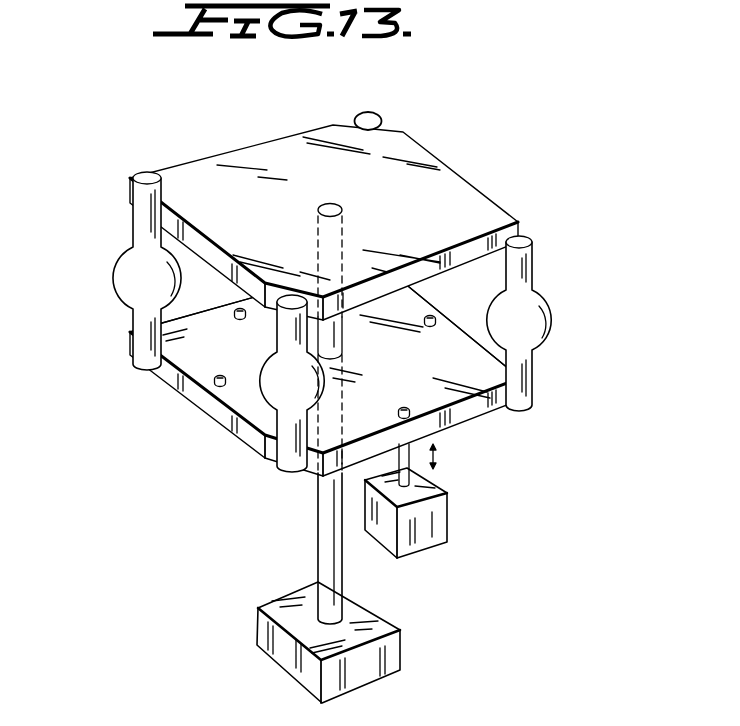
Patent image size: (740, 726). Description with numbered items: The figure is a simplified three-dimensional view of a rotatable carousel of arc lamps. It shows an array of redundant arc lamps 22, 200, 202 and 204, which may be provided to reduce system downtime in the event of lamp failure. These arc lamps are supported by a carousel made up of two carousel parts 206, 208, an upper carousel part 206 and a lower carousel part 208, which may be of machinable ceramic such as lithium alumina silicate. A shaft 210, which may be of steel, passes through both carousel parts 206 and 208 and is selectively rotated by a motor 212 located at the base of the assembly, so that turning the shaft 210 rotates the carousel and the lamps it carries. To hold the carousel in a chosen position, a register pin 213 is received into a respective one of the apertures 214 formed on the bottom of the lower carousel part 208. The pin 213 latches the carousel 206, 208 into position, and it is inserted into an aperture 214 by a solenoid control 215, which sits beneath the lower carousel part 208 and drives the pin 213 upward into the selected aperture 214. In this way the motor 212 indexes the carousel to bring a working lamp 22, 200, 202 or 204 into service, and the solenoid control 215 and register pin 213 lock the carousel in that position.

The arc lamp 200 is at (534, 271).
The arc lamp 202 is at (381, 113).
The arc lamp 204 is at (133, 218).
The carousel part 206 is at (463, 176).
The carousel part 208 is at (217, 412).
The shaft 210 is at (344, 228).
The motor 212 is at (280, 602).
The register pin 213 is at (397, 460).
The apertures 214 is at (240, 318).
The solenoid control 215 is at (448, 510).
The arc lamp 22 is at (273, 389).